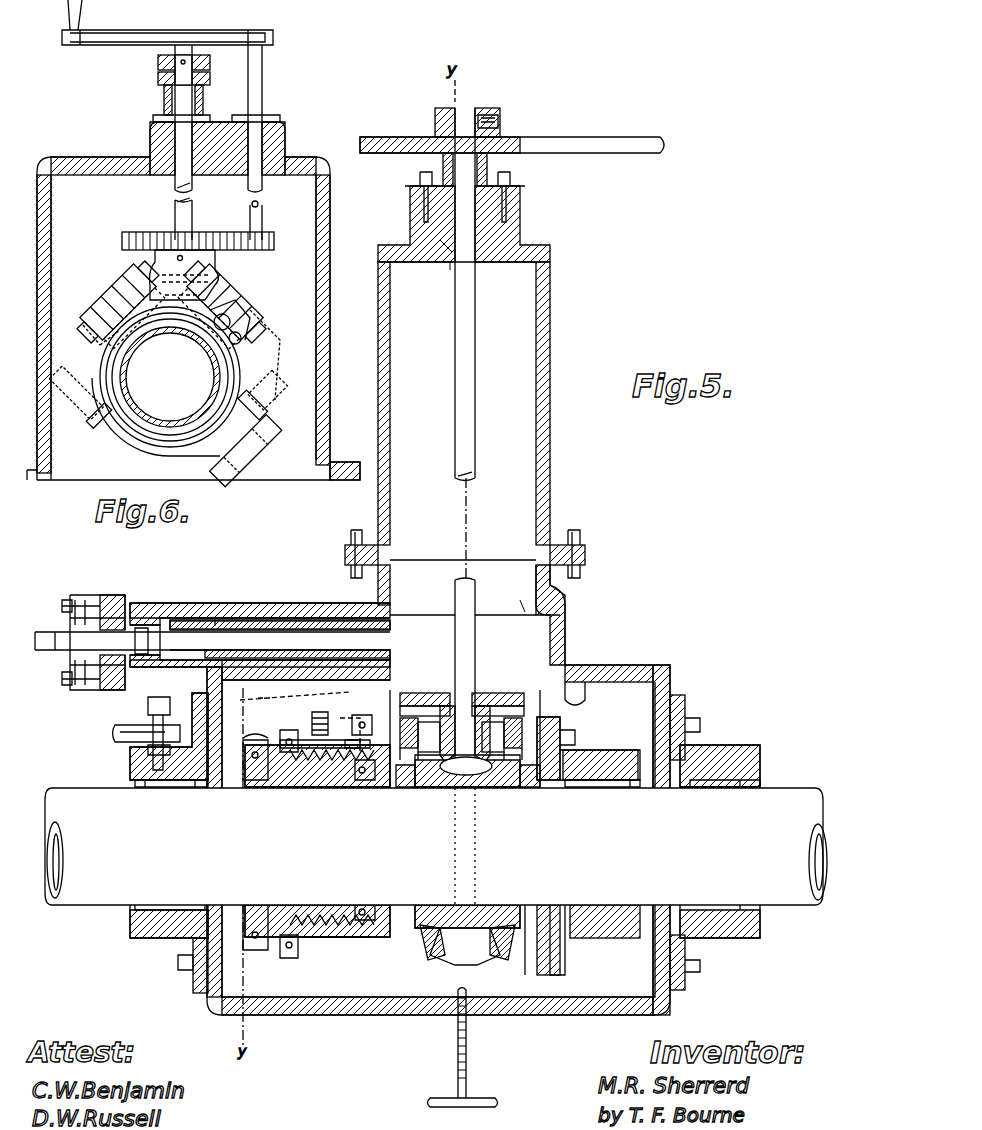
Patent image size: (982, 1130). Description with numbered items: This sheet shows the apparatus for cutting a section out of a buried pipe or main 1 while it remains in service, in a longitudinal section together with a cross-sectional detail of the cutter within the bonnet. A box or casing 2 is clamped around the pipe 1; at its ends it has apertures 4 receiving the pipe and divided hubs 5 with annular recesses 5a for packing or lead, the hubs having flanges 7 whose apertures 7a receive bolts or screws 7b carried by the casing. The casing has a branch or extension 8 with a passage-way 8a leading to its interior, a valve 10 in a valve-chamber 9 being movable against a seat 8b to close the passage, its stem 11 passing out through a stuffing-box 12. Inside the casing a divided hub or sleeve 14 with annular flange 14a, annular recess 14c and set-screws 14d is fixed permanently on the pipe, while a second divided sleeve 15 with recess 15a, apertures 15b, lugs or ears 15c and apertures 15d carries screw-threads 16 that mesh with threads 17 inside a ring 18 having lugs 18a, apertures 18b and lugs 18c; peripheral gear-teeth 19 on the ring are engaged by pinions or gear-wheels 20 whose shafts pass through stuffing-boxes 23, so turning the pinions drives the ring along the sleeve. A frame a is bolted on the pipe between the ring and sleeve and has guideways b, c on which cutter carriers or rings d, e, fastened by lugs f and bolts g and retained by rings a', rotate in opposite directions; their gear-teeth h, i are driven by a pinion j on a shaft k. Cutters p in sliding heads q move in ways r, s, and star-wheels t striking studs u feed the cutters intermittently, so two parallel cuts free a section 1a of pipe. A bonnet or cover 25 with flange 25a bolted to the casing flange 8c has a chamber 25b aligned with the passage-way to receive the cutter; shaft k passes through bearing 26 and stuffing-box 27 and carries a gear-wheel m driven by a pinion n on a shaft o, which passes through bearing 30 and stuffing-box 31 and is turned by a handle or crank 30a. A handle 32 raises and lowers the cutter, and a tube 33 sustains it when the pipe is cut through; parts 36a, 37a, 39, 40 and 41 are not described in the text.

In FIG. 6, the pipe or main 1 is at (185, 421).
In FIG. 5, the pipe or main 1 is at (150, 863).
In FIG. 5, the section of the pipe 1a is at (465, 846).
In FIG. 5, the box or casing 2 is at (365, 828).
In FIG. 5, the apertures 4 is at (215, 920).
In FIG. 5, the hubs 5 is at (128, 755).
In FIG. 5, the annular recesses 5a is at (165, 788).
In FIG. 5, the flanges 7 is at (685, 700).
In FIG. 5, the apertures 7a is at (700, 708).
In FIG. 5, the bolts or screws 7b is at (705, 726).
In FIG. 5, the branch or extension 8 is at (567, 628).
In FIG. 5, the passage-way 8a is at (511, 597).
In FIG. 5, the seat 8b is at (412, 612).
In FIG. 5, the flange 8c is at (583, 569).
In FIG. 5, the valve-chamber 9 is at (260, 630).
In FIG. 5, the valve 10 is at (232, 625).
In FIG. 5, the stem 11 is at (212, 639).
In FIG. 5, the stuffing-box 12 is at (93, 629).
In FIG. 5, the divided hub or sleeve 14 is at (595, 768).
In FIG. 5, the annular flange 14a is at (600, 746).
In FIG. 5, the annular recess 14c is at (602, 796).
In FIG. 5, the set-screws 14d is at (580, 787).
In FIG. 5, the divided sleeve 15 is at (335, 775).
In FIG. 5, the annular recess 15a is at (280, 905).
In FIG. 5, the apertures 15b is at (365, 780).
In FIG. 5, the lugs or ears 15c is at (248, 762).
In FIG. 5, the apertures 15d is at (258, 750).
In FIG. 5, the screw-threads 16 is at (290, 765).
In FIG. 5, the threads 17 is at (310, 778).
In FIG. 5, the ring 18 is at (341, 837).
In FIG. 5, the lugs 18a is at (314, 847).
In FIG. 5, the apertures 18b is at (380, 980).
In FIG. 5, the lugs 18c is at (372, 720).
In FIG. 5, the peripheral gear-teeth 19 is at (308, 740).
In FIG. 5, the pinions or gear-wheels 20 is at (322, 712).
In FIG. 5, the stuffing-boxes 23 is at (170, 700).
In FIG. 6, the bonnet or cover 25 is at (190, 318).
In FIG. 5, the bonnet or cover 25 is at (456, 365).
In FIG. 6, the flange 25a is at (348, 461).
In FIG. 5, the flange 25a is at (474, 502).
In FIG. 6, the chamber 25b is at (139, 424).
In FIG. 5, the chamber 25b is at (463, 356).
In FIG. 6, the bearing 26 is at (175, 178).
In FIG. 5, the bearing 26 is at (452, 270).
In FIG. 6, the stuffing-box 27 is at (152, 130).
In FIG. 5, the stuffing-box 27 is at (412, 188).
In FIG. 6, the bearing 30 is at (262, 180).
In FIG. 6, the handle or crank 30a is at (167, 22).
In FIG. 6, the stuffing-box 31 is at (275, 118).
In FIG. 6, the handle 32 is at (158, 68).
In FIG. 5, the handle 32 is at (512, 130).
In FIG. 6, the tube 33 is at (158, 98).
In FIG. 5, the tube 33 is at (490, 162).
In FIG. 5, the valve part 36a is at (521, 945).
In FIG. 5, the valve part 37a is at (403, 935).
In FIG. 5, the ring 39 is at (548, 950).
In FIG. 5, the adjusting screw 40 is at (461, 1048).
In FIG. 5, the screw thread 41 is at (470, 1020).
In FIG. 6, the shaft k is at (192, 218).
In FIG. 5, the shaft k is at (455, 404).
In FIG. 6, the studs u is at (205, 238).
In FIG. 5, the studs u is at (440, 700).
In FIG. 6, the gear-teeth i is at (174, 257).
In FIG. 5, the gear-teeth i is at (428, 692).
In FIG. 6, the gear-wheel m is at (198, 228).
In FIG. 5, the gear-wheel m is at (462, 711).
In FIG. 6, the star-wheels t is at (115, 285).
In FIG. 5, the star-wheels t is at (530, 712).
In FIG. 6, the sliding heads q is at (302, 289).
In FIG. 5, the sliding heads q is at (464, 737).
In FIG. 6, the pinion or gear-wheel j is at (184, 278).
In FIG. 5, the pinion or gear-wheel j is at (461, 740).
In FIG. 5, the annular guideway b is at (437, 775).
In FIG. 6, the cutter carrier or ring d is at (250, 378).
In FIG. 5, the cutter carrier or ring d is at (445, 778).
In FIG. 5, the gear-teeth h is at (415, 778).
In FIG. 5, the cutter carrier or ring e is at (490, 772).
In FIG. 5, the annular guideway c is at (510, 776).
In FIG. 6, the cutters p is at (230, 322).
In FIG. 5, the cutters p is at (388, 790).
In FIG. 5, the frame a is at (467, 935).
In FIG. 6, the rings a' is at (164, 337).
In FIG. 5, the rings a' is at (460, 910).
In FIG. 6, the shaft o is at (265, 200).
In FIG. 6, the pinion n is at (271, 222).
In FIG. 6, the ways s is at (179, 301).
In FIG. 6, the ways r is at (85, 312).
In FIG. 6, the bolts g is at (280, 407).
In FIG. 6, the lugs f is at (246, 398).